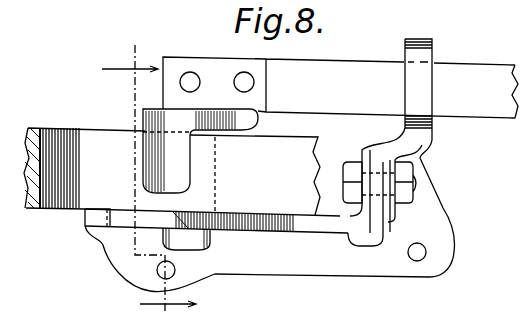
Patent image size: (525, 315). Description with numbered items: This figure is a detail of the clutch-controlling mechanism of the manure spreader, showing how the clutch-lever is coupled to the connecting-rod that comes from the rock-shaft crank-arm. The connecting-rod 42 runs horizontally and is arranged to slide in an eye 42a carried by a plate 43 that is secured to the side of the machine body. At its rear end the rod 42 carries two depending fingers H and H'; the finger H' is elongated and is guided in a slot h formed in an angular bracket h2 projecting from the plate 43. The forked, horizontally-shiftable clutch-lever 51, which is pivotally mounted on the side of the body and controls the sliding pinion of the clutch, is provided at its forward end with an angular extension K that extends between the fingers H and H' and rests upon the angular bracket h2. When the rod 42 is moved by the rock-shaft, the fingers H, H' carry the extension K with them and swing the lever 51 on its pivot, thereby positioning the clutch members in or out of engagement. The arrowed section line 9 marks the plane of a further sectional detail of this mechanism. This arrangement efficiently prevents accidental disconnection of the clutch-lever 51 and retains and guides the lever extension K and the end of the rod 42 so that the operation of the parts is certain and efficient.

The section line 9 is at (149, 166).
The connecting-rod 42 is at (477, 68).
The eye 42a is at (421, 36).
The slot h is at (431, 187).
The plate 43 is at (333, 268).
The angular bracket h2 is at (274, 226).
The clutch-lever 51 is at (44, 211).
The finger H is at (179, 161).
The elongated finger H' is at (189, 248).
The angular extension K is at (255, 175).